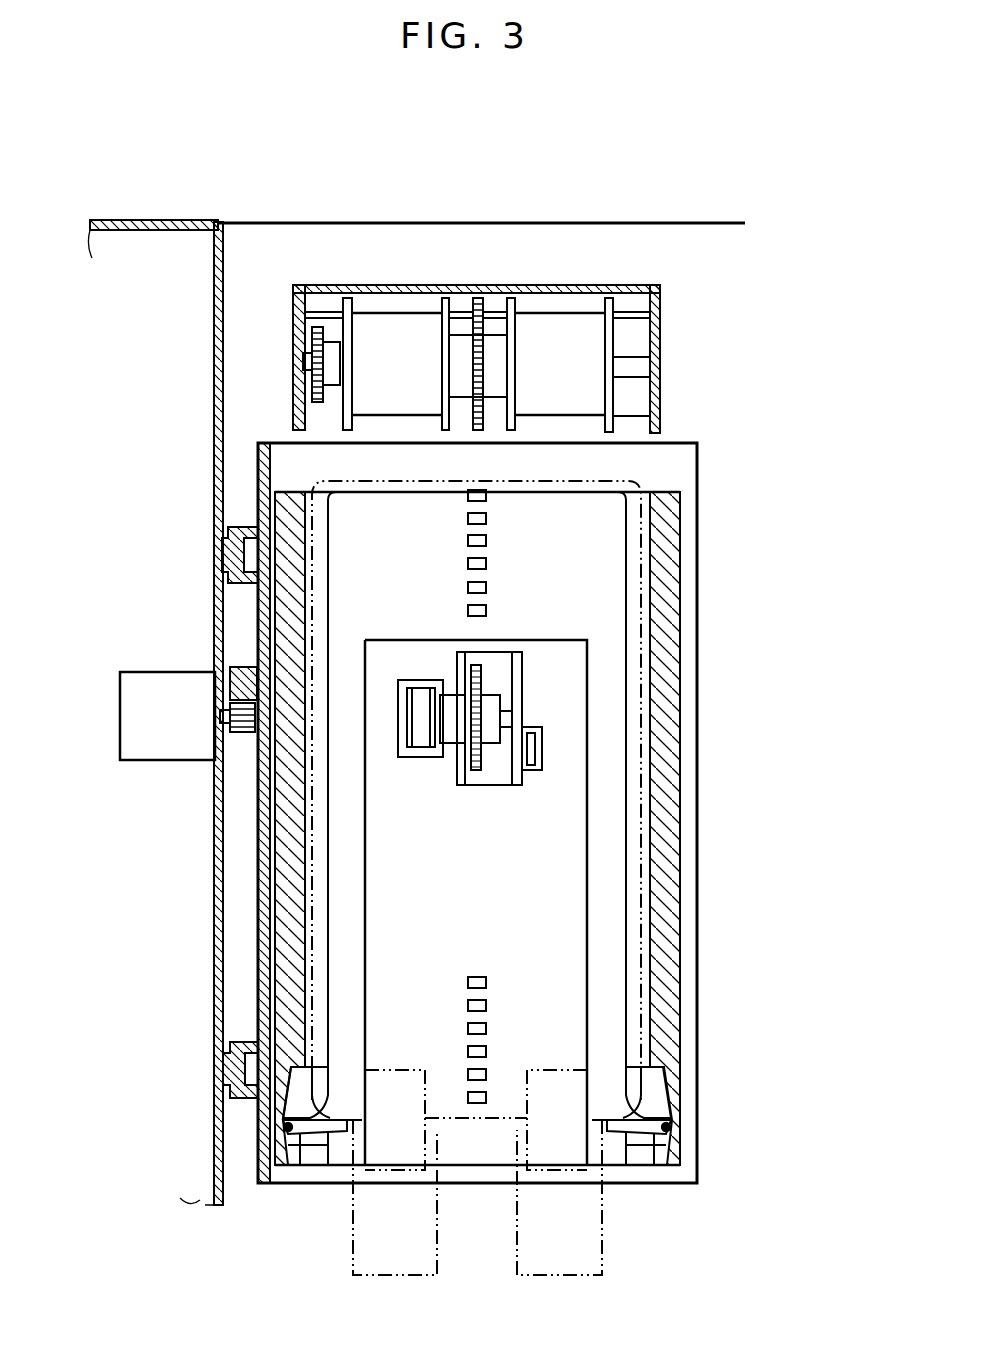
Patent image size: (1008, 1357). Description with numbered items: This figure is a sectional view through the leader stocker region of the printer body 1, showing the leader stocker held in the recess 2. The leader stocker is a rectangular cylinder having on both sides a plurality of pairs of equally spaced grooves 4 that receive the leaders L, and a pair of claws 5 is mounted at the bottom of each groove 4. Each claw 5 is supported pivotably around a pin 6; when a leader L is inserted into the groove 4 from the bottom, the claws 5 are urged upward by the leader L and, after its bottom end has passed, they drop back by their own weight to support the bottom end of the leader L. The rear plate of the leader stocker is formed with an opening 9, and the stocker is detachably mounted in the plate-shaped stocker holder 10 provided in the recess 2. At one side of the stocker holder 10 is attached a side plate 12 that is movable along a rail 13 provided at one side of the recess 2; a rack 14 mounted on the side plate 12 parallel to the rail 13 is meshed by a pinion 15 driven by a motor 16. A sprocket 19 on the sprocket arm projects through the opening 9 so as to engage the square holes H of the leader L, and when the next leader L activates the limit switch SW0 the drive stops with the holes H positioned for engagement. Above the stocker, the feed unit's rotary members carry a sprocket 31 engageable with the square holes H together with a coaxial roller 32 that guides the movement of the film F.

The printer body 1 is at (158, 222).
The recess 2 is at (307, 242).
The sprocket 31 is at (480, 300).
The roller 32 is at (390, 330).
The stocker holder 10 is at (700, 447).
The side plate 12 is at (262, 476).
The rail 13 is at (225, 553).
The rack 14 is at (230, 672).
The pinion 15 is at (242, 732).
The motor 16 is at (135, 718).
The groove 4 is at (310, 933).
The leader L is at (310, 848).
The square holes H is at (486, 518).
The opening 9 is at (580, 825).
The sprocket 19 is at (475, 772).
The limit switch SW0 is at (537, 747).
The claw 5 is at (318, 1127).
The pin 6 is at (288, 1135).
The film F is at (363, 1248).